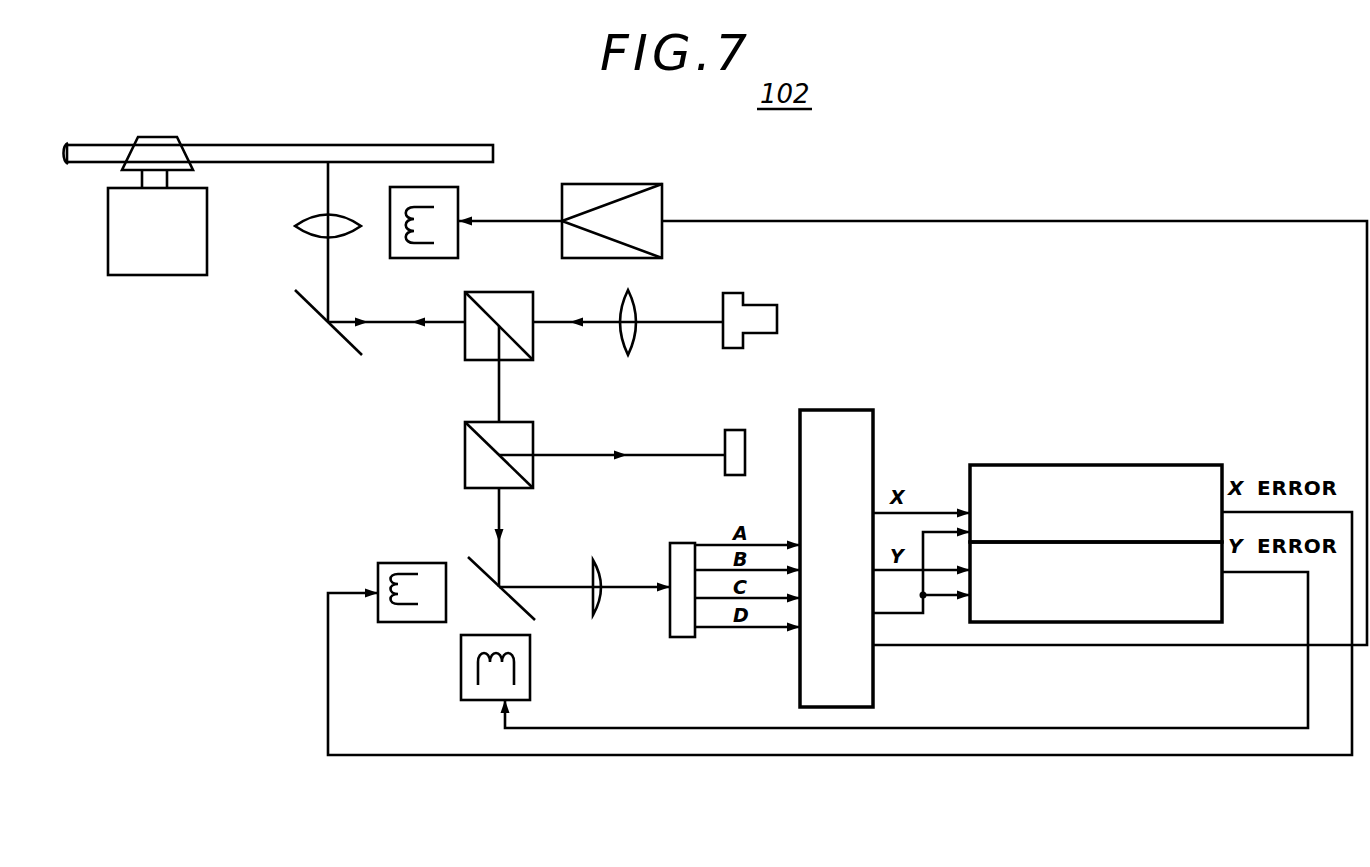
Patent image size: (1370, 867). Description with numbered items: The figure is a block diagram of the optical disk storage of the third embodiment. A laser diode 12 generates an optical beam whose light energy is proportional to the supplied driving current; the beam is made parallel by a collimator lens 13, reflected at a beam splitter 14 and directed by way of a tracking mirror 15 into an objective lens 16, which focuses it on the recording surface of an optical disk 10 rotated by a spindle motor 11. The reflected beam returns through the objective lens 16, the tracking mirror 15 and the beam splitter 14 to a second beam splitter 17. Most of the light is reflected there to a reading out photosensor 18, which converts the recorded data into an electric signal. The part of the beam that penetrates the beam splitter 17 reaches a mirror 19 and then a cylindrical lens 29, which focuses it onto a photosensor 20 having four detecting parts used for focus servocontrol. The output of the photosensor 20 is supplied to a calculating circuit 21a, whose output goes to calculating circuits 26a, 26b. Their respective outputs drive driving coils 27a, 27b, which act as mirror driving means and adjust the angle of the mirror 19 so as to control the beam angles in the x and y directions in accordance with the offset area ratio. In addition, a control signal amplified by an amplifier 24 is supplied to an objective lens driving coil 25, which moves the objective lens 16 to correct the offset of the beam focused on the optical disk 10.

The optical disk 10 is at (367, 145).
The spindle motor 11 is at (207, 252).
The laser diode 12 is at (777, 305).
The collimator lens 13 is at (642, 314).
The beam splitter 14 is at (499, 292).
The tracking mirror 15 is at (310, 308).
The objective lens 16 is at (344, 216).
The beam splitter 17 is at (519, 422).
The reading out photosensor 18 is at (747, 432).
The mirror 19 is at (485, 573).
The photosensor 20 is at (670, 610).
The calculating circuit 21a is at (822, 410).
The amplifier 24 is at (664, 208).
The objective lens driving coil 25 is at (462, 212).
The calculating circuit 26a is at (1043, 465).
The calculating circuit 26b is at (1088, 623).
The driving coil 27a is at (413, 563).
The driving coil 27b is at (530, 683).
The cylindrical lens 29 is at (592, 572).